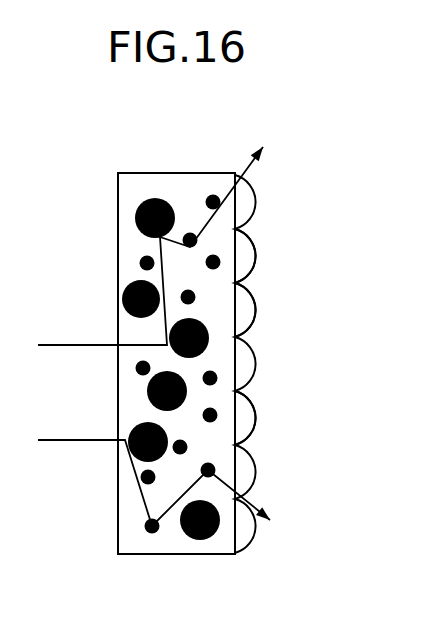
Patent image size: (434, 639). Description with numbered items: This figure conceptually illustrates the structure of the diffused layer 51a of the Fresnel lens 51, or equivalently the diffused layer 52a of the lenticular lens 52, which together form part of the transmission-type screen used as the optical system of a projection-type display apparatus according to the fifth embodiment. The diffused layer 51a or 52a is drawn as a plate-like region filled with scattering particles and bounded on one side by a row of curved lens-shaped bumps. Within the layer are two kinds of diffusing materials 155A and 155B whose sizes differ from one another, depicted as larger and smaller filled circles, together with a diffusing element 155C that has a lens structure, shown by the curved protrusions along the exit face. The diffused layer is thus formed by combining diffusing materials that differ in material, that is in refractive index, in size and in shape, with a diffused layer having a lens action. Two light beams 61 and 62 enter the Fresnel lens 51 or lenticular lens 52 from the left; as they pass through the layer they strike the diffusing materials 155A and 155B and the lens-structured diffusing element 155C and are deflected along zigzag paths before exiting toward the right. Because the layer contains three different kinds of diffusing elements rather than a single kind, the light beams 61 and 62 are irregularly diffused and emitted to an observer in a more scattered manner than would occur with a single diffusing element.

The Fresnel lens 51 is at (187, 321).
The lenticular lens 52 is at (183, 150).
The diffused layer 51a is at (176, 577).
The diffused layer 52a is at (175, 542).
The diffusing material 155A is at (218, 258).
The diffusing material 155B is at (197, 322).
The diffusing element 155C is at (238, 413).
The light beam 61 is at (63, 343).
The light beam 62 is at (58, 442).